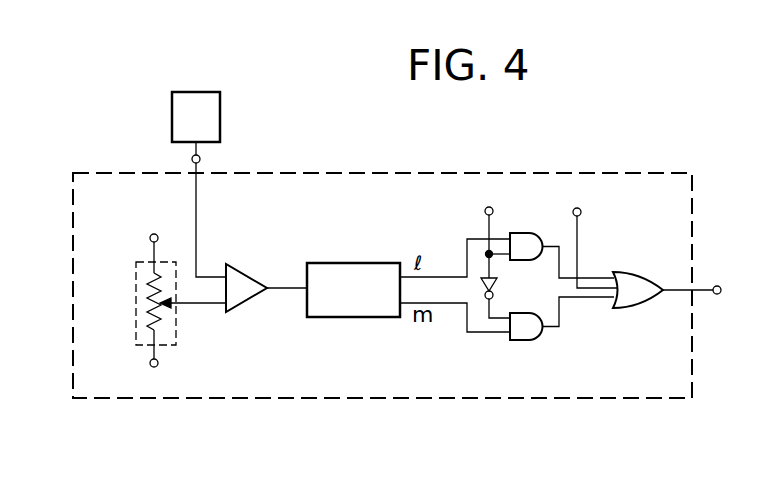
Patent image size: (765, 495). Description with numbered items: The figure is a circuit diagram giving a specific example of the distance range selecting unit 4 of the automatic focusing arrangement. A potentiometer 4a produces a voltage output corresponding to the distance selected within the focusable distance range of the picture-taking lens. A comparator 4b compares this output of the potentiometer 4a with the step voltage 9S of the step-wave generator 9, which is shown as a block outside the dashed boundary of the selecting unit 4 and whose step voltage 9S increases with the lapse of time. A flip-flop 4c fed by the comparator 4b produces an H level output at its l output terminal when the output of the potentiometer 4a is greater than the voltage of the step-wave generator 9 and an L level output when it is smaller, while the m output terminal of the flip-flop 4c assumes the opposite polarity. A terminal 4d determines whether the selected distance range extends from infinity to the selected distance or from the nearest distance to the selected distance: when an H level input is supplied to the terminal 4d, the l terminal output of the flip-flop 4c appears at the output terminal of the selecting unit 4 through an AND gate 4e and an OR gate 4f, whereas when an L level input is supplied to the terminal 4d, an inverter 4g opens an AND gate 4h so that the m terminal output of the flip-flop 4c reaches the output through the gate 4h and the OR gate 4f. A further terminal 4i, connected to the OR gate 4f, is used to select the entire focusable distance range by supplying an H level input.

The distance range selecting unit 4 is at (448, 173).
The step-wave generator 9 is at (172, 113).
The step voltage 9S is at (213, 209).
The potentiometer 4a is at (136, 320).
The comparator 4b is at (243, 303).
The flip-flop 4c is at (345, 318).
The terminal 4d is at (485, 210).
The AND gate 4e is at (522, 233).
The OR gate 4f is at (632, 308).
The inverter 4g is at (498, 284).
The AND gate 4h is at (522, 340).
The terminal 4i is at (581, 209).